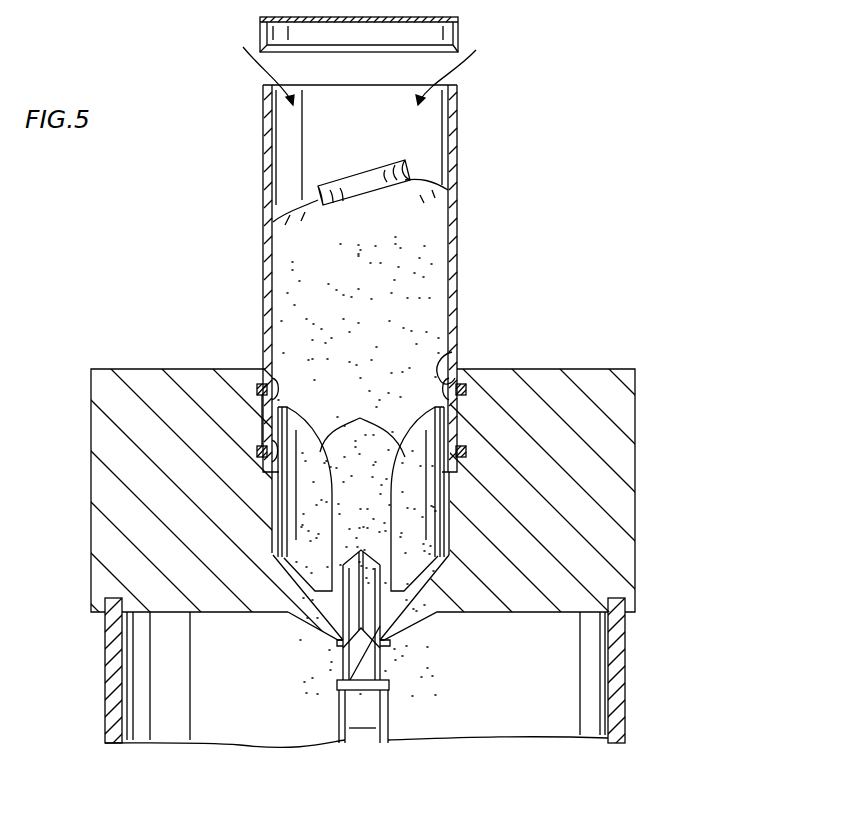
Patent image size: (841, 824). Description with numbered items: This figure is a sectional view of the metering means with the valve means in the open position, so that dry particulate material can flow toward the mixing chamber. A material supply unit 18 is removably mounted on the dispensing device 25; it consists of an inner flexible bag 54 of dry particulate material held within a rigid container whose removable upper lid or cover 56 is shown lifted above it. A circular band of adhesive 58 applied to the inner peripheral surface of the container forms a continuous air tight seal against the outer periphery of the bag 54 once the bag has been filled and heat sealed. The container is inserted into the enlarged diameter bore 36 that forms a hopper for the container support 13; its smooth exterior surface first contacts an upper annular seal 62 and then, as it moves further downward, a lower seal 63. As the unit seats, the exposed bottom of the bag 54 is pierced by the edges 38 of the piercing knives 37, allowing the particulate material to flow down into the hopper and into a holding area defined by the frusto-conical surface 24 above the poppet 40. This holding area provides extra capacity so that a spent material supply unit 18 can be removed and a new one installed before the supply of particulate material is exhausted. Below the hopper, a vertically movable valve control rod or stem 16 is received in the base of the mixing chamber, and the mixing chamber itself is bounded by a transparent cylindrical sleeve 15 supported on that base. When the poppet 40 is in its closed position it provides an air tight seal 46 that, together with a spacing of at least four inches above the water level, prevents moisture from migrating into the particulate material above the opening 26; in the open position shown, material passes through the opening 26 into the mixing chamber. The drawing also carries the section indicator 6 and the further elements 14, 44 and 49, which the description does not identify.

The upper lid or cover 56 is at (460, 26).
The material supply unit 18 is at (462, 163).
The inner flexible bag 54 is at (430, 260).
The circular band of adhesive 58 is at (452, 352).
The upper annular seal 62 is at (468, 388).
The seal 63 is at (462, 456).
The enlarged diameter bore 36 is at (268, 414).
The edges 38 is at (362, 423).
The container support 13 is at (620, 453).
The piercing knives 37 is at (300, 495).
The bore 14 is at (452, 503).
The dispensing device 25 is at (662, 498).
The section line 6 is at (217, 519).
The shoulder 49 is at (388, 644).
The frusto-conical surface 24 is at (423, 583).
The poppet 40 is at (343, 646).
The blade surface 44 is at (345, 667).
The opening 26 is at (344, 690).
The air tight seal 46 is at (389, 680).
The transparent cylindrical sleeve 15 is at (626, 708).
The valve control rod or stem 16 is at (382, 727).